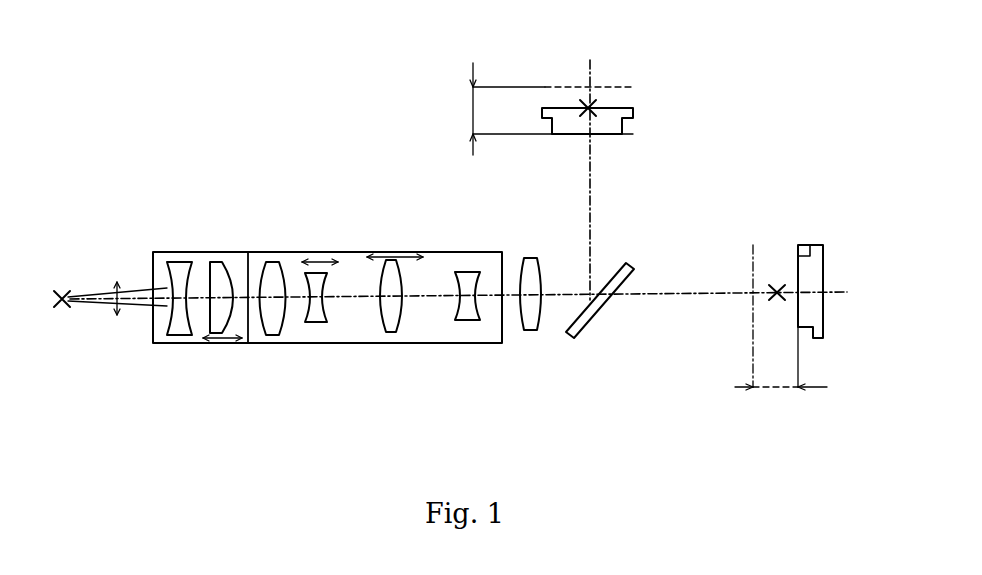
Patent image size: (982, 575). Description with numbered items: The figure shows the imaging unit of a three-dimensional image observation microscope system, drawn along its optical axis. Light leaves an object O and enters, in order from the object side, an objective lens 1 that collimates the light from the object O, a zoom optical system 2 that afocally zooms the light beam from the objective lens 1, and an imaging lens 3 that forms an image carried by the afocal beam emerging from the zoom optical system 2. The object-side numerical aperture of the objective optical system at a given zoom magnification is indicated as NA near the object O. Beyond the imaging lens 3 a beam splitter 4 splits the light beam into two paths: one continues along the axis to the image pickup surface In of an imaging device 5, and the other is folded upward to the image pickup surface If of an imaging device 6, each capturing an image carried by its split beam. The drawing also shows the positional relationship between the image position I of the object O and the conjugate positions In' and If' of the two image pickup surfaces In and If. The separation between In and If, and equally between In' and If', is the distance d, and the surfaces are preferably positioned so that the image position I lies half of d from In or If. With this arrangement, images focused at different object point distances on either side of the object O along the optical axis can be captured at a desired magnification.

The object O is at (60, 290).
The object-side numerical aperture NA is at (117, 286).
The objective lens 1 is at (198, 267).
The zoom optical system 2 is at (343, 262).
The imaging lens 3 is at (530, 320).
The beam splitter 4 is at (590, 307).
The imaging device 5 is at (815, 317).
The imaging device 6 is at (563, 125).
The image position I is at (777, 292).
The image pickup surface In is at (826, 220).
The conjugate position of image pickup surface In In' is at (556, 63).
The image pickup surface If is at (620, 160).
The conjugate position of image pickup surface If If' is at (706, 245).
The distance d is at (634, 246).